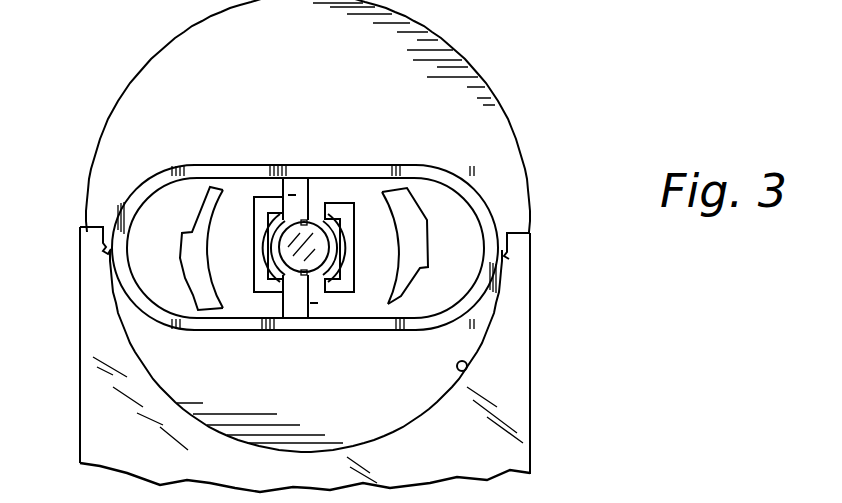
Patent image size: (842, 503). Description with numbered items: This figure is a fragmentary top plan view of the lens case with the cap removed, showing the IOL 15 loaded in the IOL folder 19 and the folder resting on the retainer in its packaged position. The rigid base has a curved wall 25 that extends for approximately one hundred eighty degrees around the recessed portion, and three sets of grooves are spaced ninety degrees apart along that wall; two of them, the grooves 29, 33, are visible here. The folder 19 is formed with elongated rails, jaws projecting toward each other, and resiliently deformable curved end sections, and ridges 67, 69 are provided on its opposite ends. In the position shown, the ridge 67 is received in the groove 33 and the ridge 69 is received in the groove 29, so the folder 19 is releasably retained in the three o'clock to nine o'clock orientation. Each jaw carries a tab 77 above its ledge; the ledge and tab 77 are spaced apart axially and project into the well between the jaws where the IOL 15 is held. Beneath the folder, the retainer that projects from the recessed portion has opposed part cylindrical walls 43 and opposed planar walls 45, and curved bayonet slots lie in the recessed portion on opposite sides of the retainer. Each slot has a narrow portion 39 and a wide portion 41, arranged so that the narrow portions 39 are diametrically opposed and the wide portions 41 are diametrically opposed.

The IOL 15 is at (320, 250).
The IOL folder 19 is at (471, 182).
The curved wall 25 is at (470, 363).
The groove 29 is at (507, 260).
The groove 33 is at (110, 253).
The narrow portion 39 is at (183, 177).
The wide portion 41 is at (407, 203).
The part cylindrical wall 43 is at (255, 197).
The planar wall 45 is at (205, 205).
The ridge 67 is at (118, 220).
The ridge 69 is at (487, 230).
The tab 77 is at (320, 205).